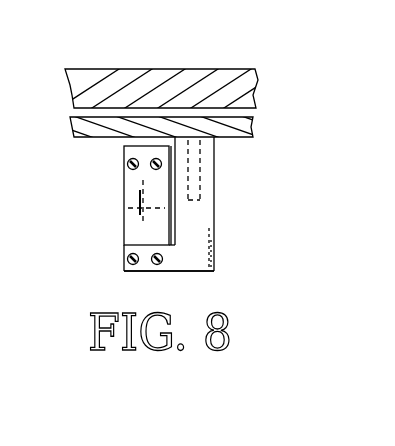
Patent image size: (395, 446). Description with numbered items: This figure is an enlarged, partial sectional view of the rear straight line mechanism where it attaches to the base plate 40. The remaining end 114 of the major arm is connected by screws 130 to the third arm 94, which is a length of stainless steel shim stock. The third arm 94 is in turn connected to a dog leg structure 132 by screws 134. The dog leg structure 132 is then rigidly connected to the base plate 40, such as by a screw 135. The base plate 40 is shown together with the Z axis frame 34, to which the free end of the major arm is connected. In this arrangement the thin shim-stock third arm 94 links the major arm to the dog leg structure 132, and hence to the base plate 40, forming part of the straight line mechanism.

The Z axis frame 34 is at (257, 72).
The base plate 40 is at (253, 122).
The screws 130 is at (123, 160).
The remaining end of the major arm 114 is at (122, 190).
The third arm 94 is at (125, 227).
The screw 135 is at (228, 140).
The dog leg structure 132 is at (215, 232).
The screws 134 is at (169, 288).